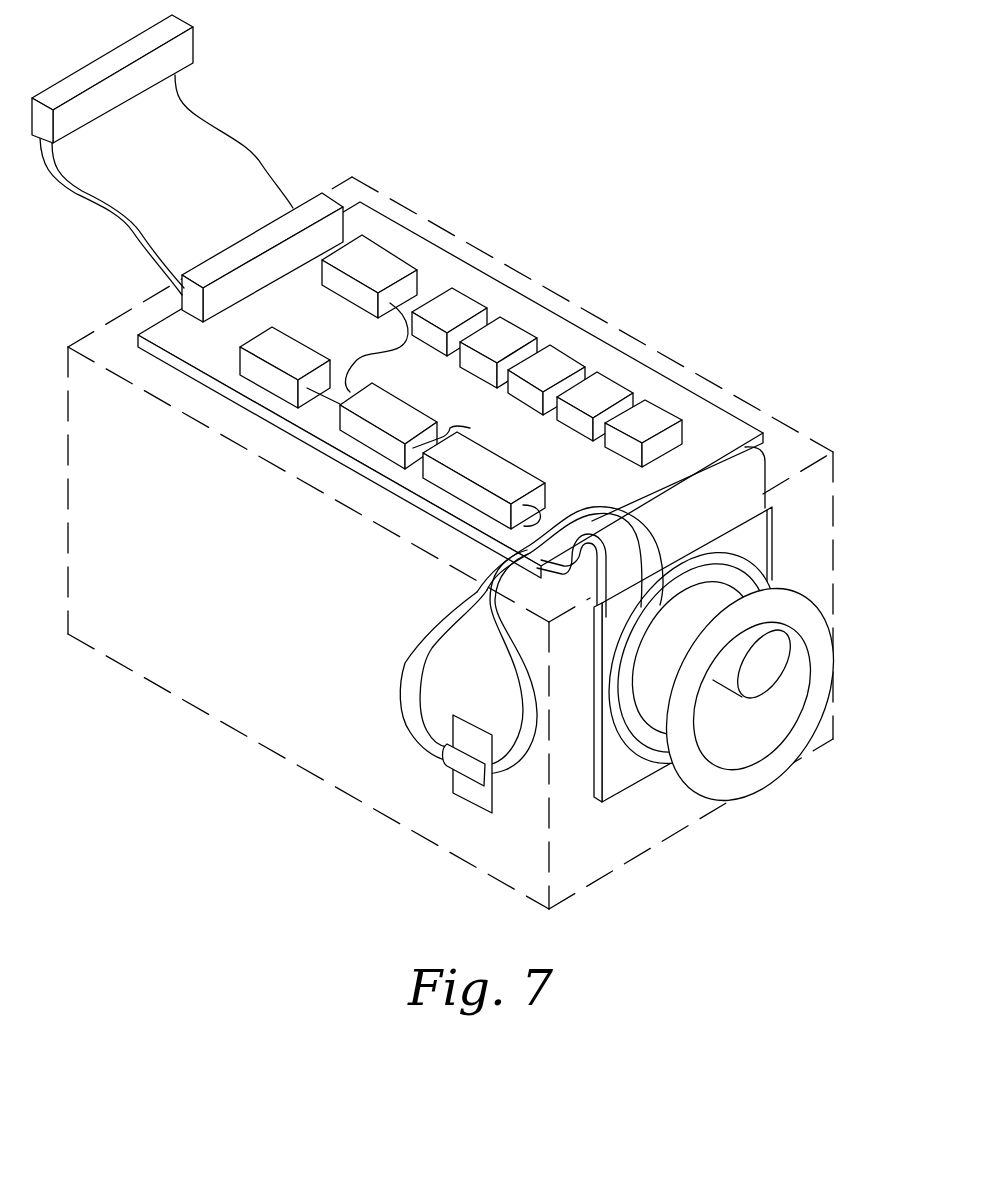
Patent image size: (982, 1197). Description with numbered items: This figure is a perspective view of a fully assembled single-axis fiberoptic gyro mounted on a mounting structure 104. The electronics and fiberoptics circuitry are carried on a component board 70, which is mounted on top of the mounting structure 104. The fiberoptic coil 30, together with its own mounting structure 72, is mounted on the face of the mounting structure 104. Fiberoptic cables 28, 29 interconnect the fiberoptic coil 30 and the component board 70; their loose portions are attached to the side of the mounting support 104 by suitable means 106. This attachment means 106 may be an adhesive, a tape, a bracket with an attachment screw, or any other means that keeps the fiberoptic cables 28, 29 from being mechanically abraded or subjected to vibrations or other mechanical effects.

The board 70 is at (747, 407).
The mounting structure 72 is at (772, 541).
The mounting structure 104 is at (217, 590).
The suitable means 106 is at (470, 790).
The fiberoptic cable 28 is at (417, 717).
The fiberoptic cable 29 is at (400, 682).
The fiberoptic coil 30 is at (660, 732).